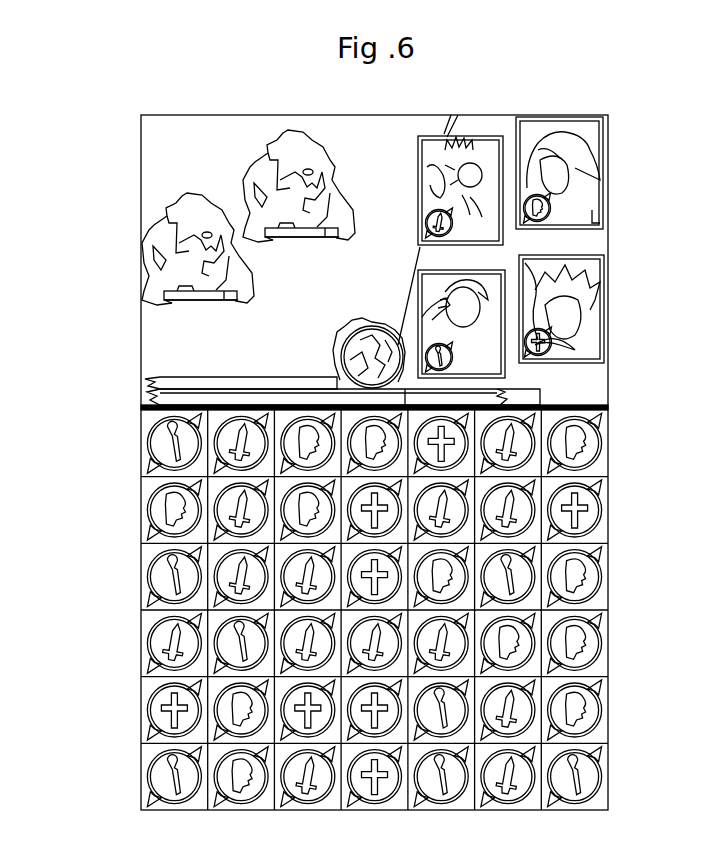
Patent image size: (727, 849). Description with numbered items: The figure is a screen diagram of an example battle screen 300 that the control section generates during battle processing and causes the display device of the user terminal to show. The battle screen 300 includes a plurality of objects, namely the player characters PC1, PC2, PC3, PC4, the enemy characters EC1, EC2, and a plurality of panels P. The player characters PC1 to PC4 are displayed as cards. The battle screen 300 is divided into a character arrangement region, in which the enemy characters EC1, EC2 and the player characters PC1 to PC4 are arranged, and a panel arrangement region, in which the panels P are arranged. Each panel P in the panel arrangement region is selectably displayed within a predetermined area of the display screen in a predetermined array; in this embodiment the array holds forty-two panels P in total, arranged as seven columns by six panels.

The battle screen 300 is at (141, 342).
The enemy character EC1 is at (250, 170).
The enemy character EC2 is at (170, 237).
The player character PC1 is at (603, 175).
The player character PC2 is at (503, 236).
The player character PC3 is at (505, 345).
The player character PC4 is at (604, 303).
The panel P is at (608, 510).